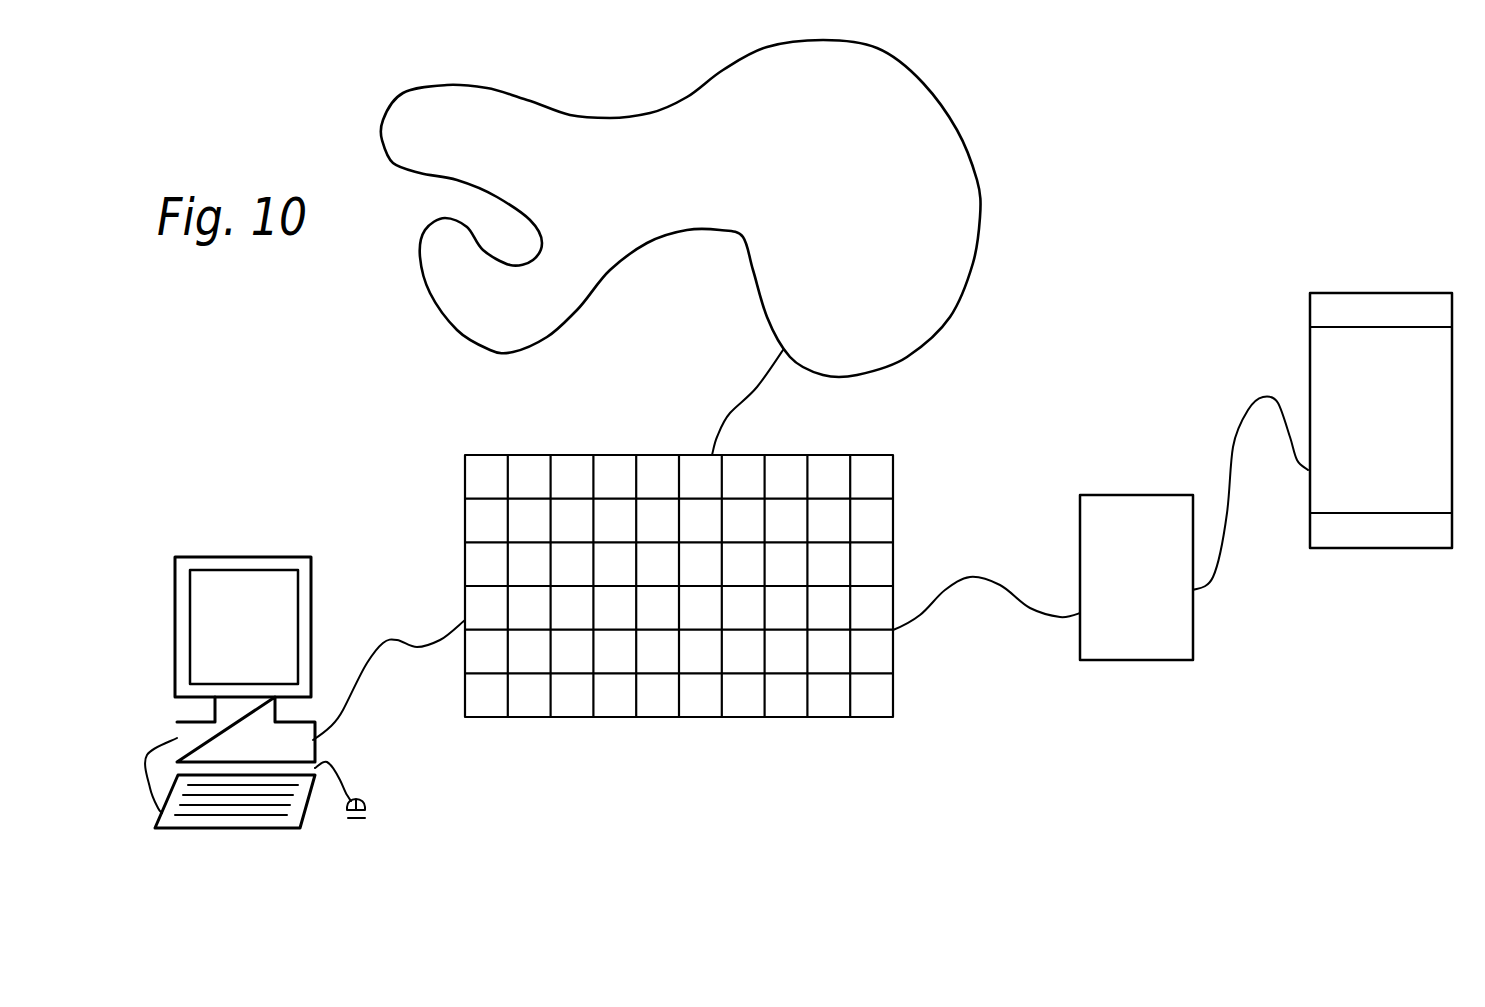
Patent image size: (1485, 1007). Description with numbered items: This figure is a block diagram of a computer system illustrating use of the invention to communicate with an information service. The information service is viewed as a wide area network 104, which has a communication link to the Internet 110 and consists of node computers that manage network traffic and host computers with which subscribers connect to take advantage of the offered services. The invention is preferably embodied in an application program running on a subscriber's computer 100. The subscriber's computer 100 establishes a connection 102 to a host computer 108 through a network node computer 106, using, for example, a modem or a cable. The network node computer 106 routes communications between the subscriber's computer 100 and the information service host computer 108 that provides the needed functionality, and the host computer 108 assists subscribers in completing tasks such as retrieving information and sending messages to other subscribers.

The subscriber's computer 100 is at (183, 557).
The connection 102 is at (385, 640).
The wide area network 104 is at (893, 695).
The network node computer 106 is at (1193, 623).
The host computer 108 is at (1453, 543).
The Internet 110 is at (670, 103).